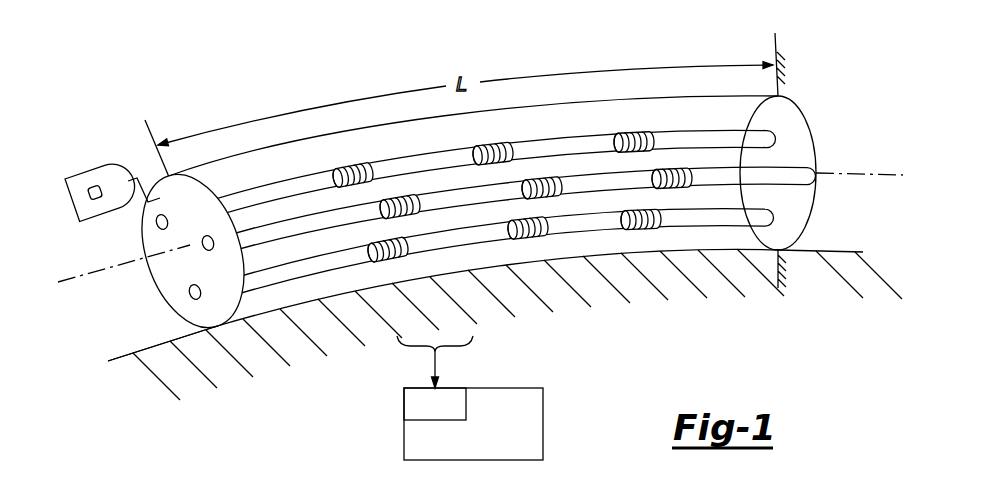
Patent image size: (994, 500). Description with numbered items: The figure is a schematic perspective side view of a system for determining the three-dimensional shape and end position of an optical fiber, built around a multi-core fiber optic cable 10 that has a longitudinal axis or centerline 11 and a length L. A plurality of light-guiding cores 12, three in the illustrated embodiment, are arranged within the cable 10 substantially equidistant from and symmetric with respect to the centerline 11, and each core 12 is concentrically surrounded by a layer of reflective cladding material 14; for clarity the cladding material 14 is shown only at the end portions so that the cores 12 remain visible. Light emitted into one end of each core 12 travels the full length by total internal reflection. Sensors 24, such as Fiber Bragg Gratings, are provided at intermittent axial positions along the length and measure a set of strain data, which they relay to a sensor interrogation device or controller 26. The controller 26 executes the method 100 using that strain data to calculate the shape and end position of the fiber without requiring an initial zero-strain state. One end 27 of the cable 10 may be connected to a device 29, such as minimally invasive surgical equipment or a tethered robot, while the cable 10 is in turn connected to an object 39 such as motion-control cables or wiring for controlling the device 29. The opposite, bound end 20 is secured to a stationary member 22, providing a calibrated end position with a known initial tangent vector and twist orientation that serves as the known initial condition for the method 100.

The multi-core fiber optic cable 10 is at (669, 35).
The longitudinal axis or centerline 11 is at (77, 286).
The light-guiding cores 12 is at (456, 240).
The reflective cladding material 14 is at (200, 308).
The bound end 20 is at (767, 260).
The stationary member 22 is at (786, 60).
The sensors 24 is at (622, 136).
The controller 26 is at (500, 398).
The end 27 is at (229, 339).
The device 29 is at (103, 163).
The object 39 is at (842, 230).
The method 100 is at (435, 404).